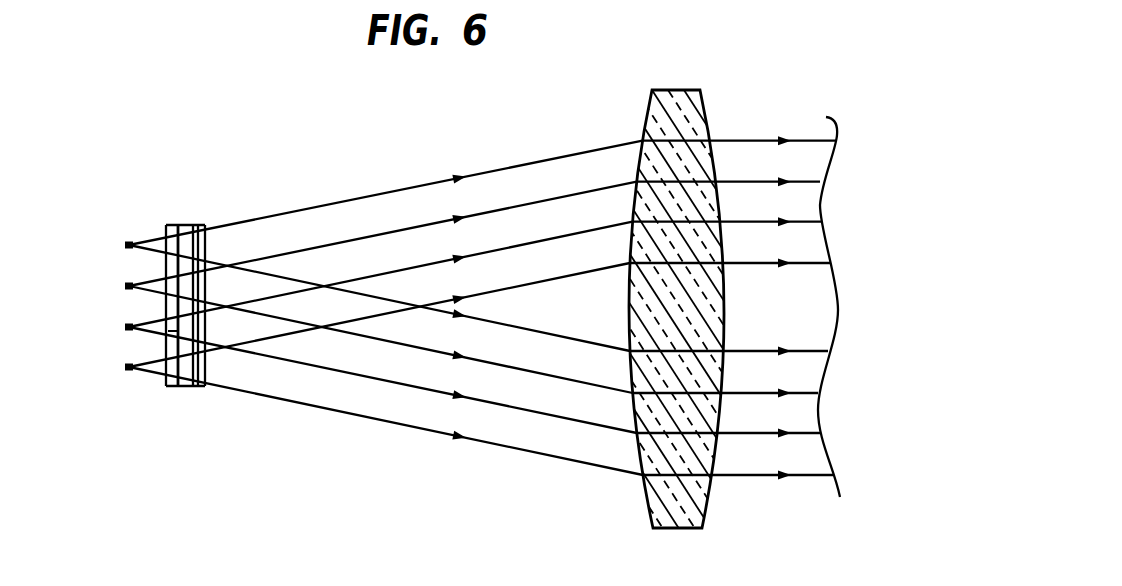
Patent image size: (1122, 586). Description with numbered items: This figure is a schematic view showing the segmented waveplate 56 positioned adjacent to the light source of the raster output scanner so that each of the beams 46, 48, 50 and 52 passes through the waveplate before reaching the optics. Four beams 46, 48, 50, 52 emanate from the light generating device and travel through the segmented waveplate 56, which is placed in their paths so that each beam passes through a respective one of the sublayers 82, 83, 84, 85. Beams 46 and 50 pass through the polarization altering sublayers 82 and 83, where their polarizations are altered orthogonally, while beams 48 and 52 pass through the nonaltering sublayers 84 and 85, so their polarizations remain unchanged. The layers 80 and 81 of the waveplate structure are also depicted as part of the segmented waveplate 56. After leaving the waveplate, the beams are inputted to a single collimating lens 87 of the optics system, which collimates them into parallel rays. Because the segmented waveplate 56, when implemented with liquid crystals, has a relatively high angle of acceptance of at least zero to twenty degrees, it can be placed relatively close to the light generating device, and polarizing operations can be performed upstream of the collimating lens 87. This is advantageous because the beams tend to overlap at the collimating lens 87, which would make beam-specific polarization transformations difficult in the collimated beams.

The beam 46 is at (122, 231).
The beam 48 is at (122, 273).
The beam 50 is at (122, 315).
The beam 52 is at (122, 356).
The segmented waveplate 56 is at (186, 314).
The hologram layer 80 is at (185, 241).
The plate layer 81 is at (176, 331).
The polarization altering sublayer 82 is at (168, 272).
The polarization altering sublayer 83 is at (207, 374).
The nonaltering sublayer 84 is at (174, 388).
The nonaltering sublayer 85 is at (198, 388).
The collimating lens 87 is at (677, 88).